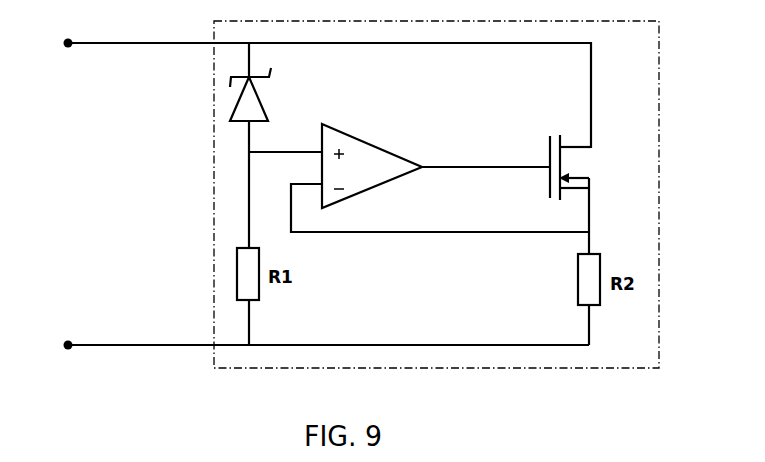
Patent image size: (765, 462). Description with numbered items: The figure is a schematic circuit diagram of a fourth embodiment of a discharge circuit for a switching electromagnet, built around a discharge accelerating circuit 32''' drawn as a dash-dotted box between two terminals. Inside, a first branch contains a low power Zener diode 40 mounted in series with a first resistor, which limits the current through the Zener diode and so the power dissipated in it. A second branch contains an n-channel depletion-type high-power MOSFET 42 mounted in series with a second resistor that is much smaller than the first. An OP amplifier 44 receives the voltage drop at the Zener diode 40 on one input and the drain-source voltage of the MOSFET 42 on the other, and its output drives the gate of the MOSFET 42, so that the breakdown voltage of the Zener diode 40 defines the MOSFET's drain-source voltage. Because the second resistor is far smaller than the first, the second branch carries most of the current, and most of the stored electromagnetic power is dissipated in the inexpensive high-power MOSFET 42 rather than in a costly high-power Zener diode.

The discharge accelerating circuit 32''' is at (383, 194).
The low power Zener diode 40 is at (248, 110).
The MOSFET 42 is at (553, 135).
The OP amplifier 44 is at (350, 167).